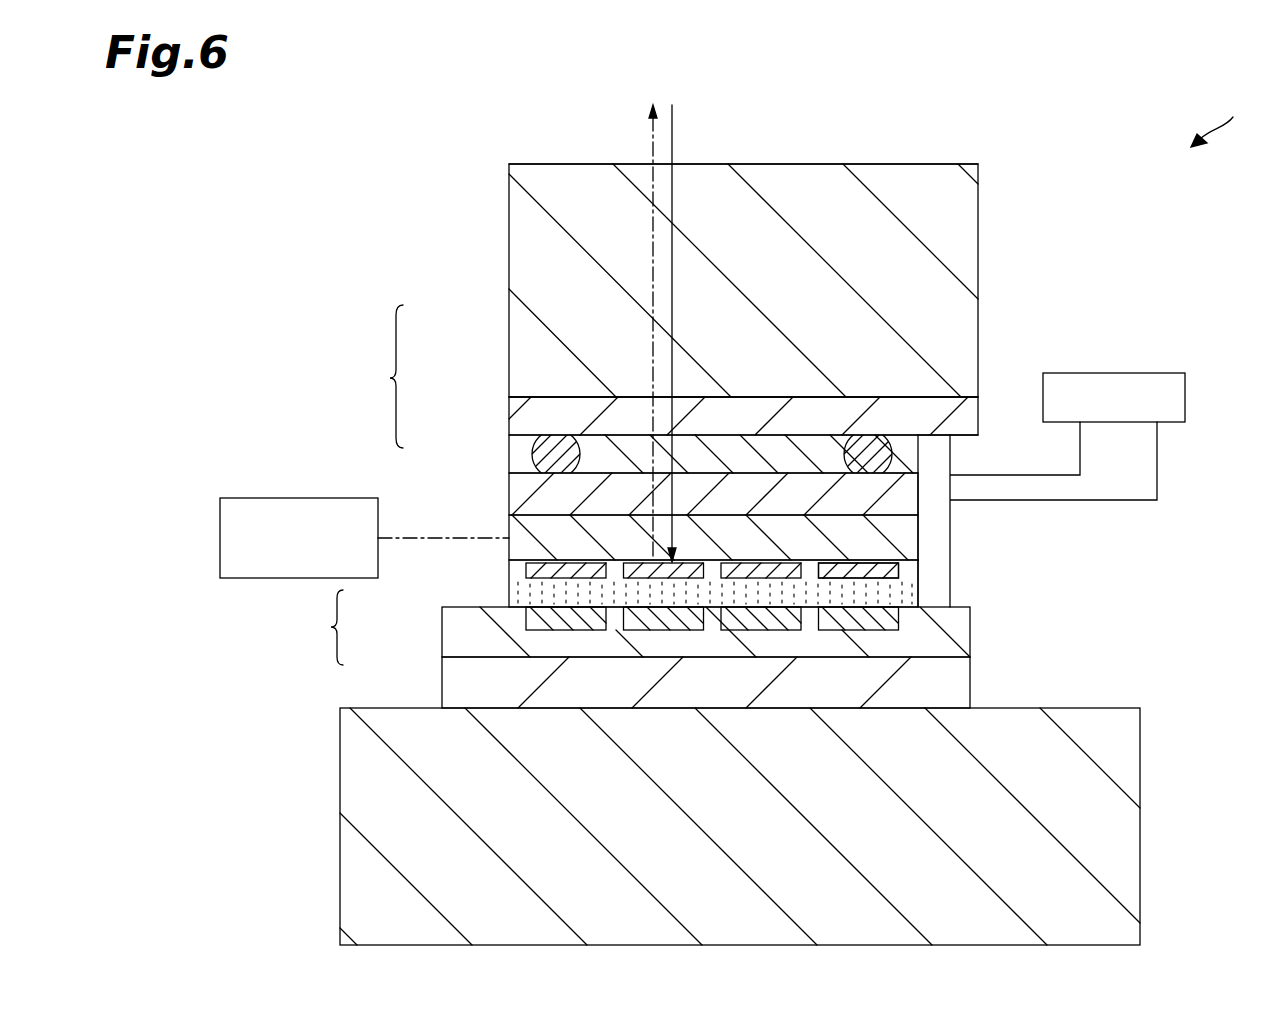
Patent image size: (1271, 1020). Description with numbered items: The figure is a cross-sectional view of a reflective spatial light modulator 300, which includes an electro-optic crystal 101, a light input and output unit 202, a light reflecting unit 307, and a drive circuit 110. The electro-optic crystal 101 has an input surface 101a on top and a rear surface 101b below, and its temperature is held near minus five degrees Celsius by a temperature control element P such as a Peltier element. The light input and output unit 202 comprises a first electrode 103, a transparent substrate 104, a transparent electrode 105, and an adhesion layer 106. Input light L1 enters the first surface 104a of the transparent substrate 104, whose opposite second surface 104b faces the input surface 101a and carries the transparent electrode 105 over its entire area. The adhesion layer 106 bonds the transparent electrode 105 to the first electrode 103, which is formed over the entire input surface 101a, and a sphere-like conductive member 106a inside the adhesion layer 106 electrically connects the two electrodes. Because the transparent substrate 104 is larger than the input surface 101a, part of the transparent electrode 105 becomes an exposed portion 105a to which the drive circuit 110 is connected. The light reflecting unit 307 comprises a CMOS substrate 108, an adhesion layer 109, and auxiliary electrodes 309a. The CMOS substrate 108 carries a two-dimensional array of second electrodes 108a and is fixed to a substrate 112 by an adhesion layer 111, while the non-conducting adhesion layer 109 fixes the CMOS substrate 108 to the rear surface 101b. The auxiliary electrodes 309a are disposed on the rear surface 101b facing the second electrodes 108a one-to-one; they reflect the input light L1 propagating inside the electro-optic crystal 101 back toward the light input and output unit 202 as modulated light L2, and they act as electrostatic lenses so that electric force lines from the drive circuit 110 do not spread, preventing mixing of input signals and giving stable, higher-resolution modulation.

The spatial light modulator 300 is at (1224, 117).
The transparent substrate 104 is at (507, 308).
The first surface 104a is at (527, 163).
The second surface 104b is at (735, 397).
The transparent electrode 105 is at (507, 407).
The exposed portion 105a is at (962, 437).
The adhesion layer 106 is at (507, 447).
The conductive member 106a is at (872, 436).
The first electrode 103 is at (507, 490).
The electro-optic crystal 101 is at (507, 530).
The input surface 101a is at (900, 497).
The rear surface 101b is at (920, 573).
The adhesion layer 109 is at (527, 587).
The auxiliary electrodes 309a is at (888, 583).
The CMOS substrate 108 is at (443, 632).
The second electrodes 108a is at (527, 622).
The adhesion layer 111 is at (968, 682).
The substrate 112 is at (1140, 820).
The drive circuit 110 is at (1185, 395).
The temperature control element P is at (220, 538).
The input light L1 is at (676, 128).
The modulated light L2 is at (650, 135).
The light input and output unit 202 is at (373, 376).
The light reflecting unit 307 is at (311, 627).